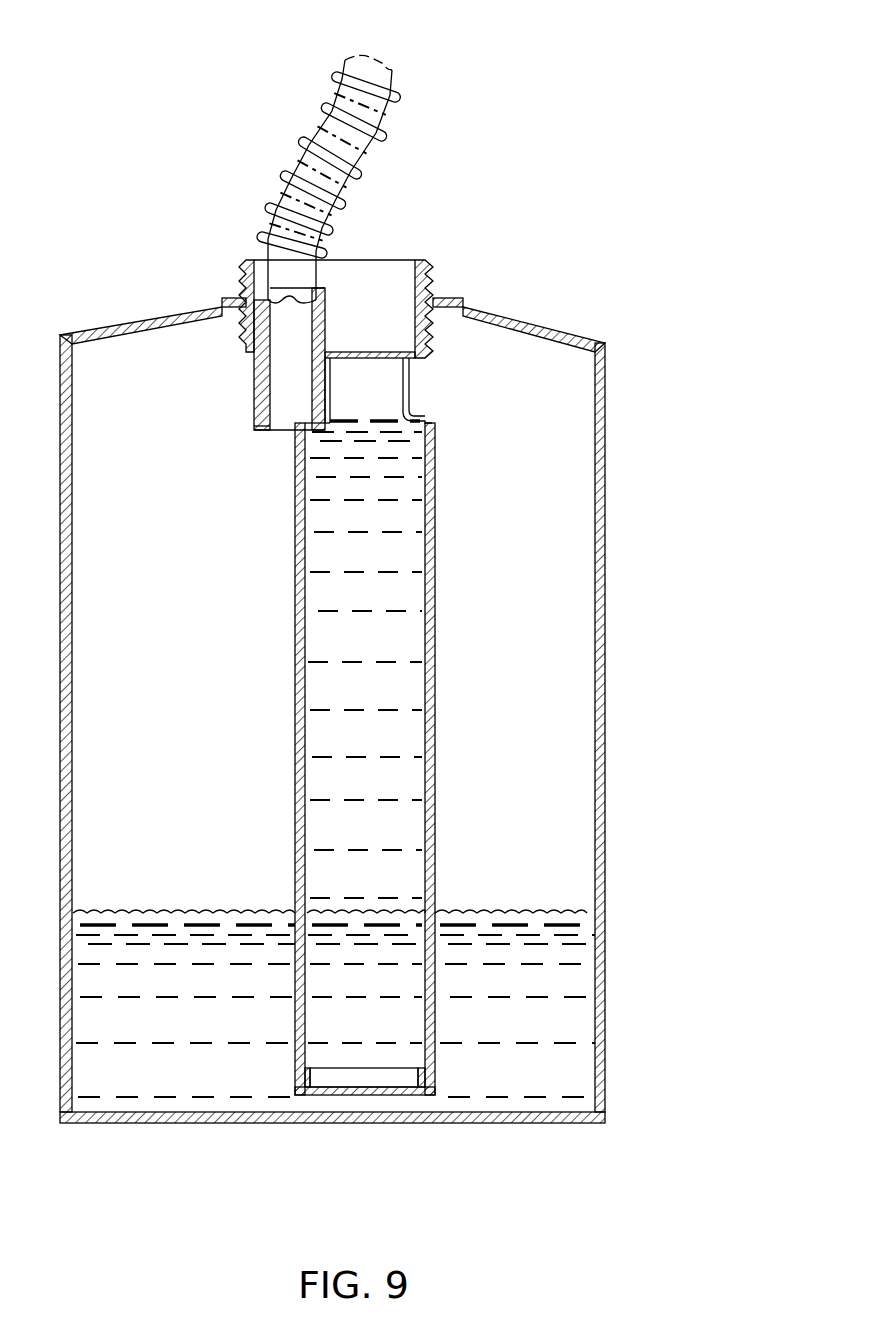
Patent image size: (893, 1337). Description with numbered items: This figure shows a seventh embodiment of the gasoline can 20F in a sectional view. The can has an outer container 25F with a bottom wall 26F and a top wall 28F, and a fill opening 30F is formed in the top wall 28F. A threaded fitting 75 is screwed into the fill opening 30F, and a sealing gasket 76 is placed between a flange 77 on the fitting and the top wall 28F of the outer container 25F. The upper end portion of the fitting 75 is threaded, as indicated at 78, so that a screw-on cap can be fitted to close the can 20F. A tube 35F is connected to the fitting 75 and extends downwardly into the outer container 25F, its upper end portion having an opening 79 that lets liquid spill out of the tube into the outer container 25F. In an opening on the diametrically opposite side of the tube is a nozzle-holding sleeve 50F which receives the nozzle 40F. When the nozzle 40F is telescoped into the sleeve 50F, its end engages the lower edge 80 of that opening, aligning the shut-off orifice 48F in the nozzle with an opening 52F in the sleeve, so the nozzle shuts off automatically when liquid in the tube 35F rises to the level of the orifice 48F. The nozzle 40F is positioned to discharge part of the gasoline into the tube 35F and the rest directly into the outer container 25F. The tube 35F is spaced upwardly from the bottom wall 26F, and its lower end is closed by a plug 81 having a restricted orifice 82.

The can 20F is at (640, 712).
The outer container 25F is at (612, 582).
The bottom wall 26F is at (452, 1126).
The top wall 28F is at (565, 338).
The fill opening 30F is at (412, 360).
The tube 35F is at (445, 770).
The nozzle 40F is at (358, 160).
The shut-off orifice 48F is at (312, 412).
The nozzle-holding sleeve 50F is at (252, 430).
The opening in the sleeve 52F is at (405, 428).
The threaded fitting 75 is at (412, 297).
The sealing gasket 76 is at (452, 306).
The flange 77 is at (442, 300).
The threads 78 is at (247, 290).
The opening 79 is at (410, 402).
The lower edge 80 is at (320, 445).
The plug 81 is at (323, 1098).
The restricted orifice 82 is at (358, 1086).